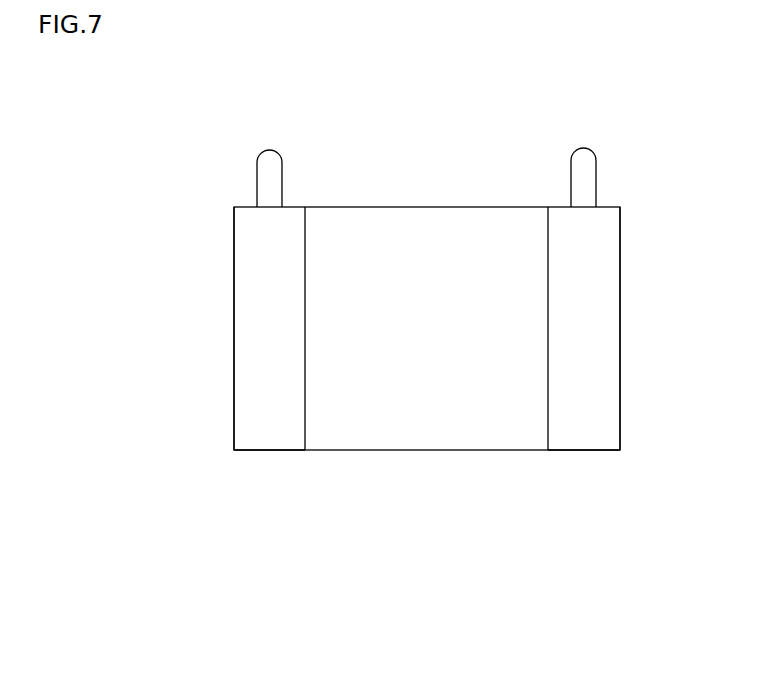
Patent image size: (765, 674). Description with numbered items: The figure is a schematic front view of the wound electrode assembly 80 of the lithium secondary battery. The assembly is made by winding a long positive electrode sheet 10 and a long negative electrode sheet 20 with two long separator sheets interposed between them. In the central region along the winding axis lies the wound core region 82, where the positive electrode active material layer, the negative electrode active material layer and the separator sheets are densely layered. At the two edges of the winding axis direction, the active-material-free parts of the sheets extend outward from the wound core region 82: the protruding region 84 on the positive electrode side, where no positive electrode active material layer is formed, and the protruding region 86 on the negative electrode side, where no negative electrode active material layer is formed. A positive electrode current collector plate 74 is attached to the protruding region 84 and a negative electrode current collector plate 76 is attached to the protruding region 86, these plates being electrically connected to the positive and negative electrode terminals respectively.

The wound electrode assembly 80 is at (176, 121).
The wound core region 82 is at (488, 417).
The positive electrode sheet 10 is at (234, 317).
The negative electrode sheet 20 is at (620, 315).
The protruding region on the positive electrode side 84 is at (245, 401).
The protruding region on the negative electrode side 86 is at (607, 400).
The positive electrode current collector plate 74 is at (268, 158).
The negative electrode current collector plate 76 is at (583, 158).